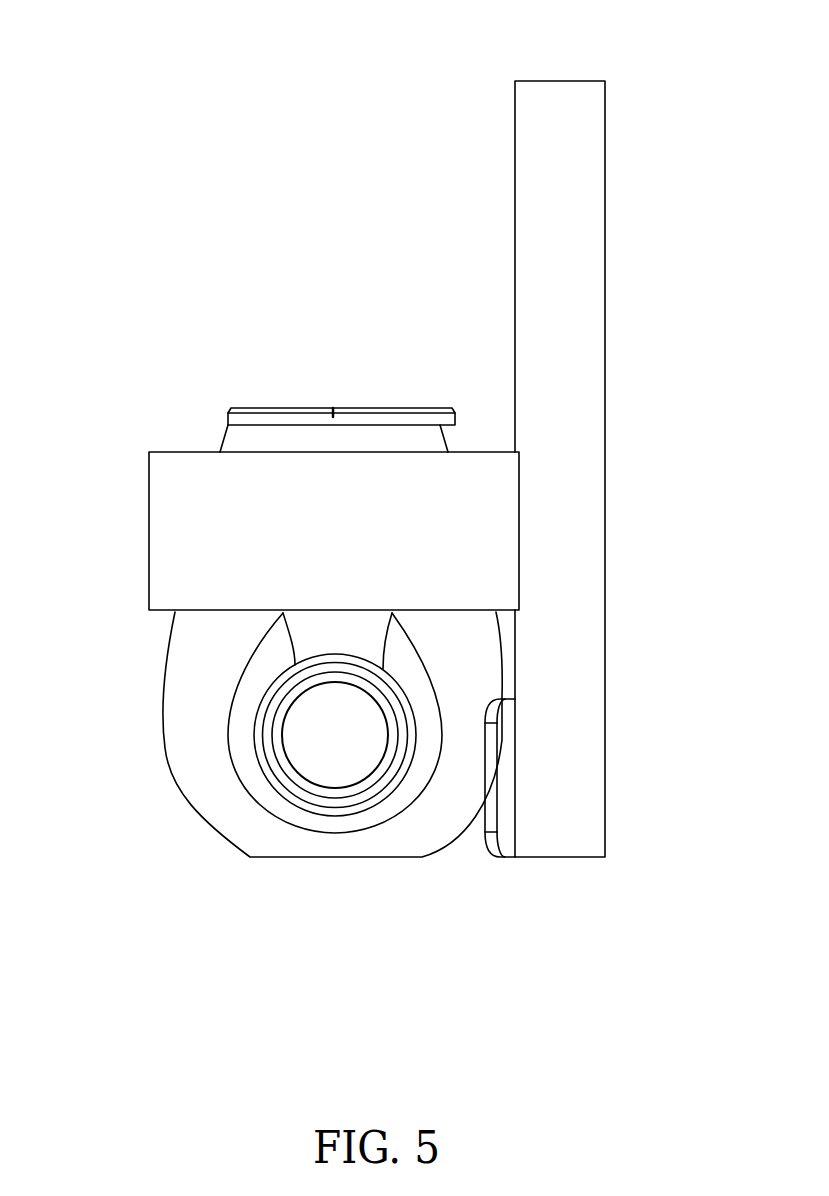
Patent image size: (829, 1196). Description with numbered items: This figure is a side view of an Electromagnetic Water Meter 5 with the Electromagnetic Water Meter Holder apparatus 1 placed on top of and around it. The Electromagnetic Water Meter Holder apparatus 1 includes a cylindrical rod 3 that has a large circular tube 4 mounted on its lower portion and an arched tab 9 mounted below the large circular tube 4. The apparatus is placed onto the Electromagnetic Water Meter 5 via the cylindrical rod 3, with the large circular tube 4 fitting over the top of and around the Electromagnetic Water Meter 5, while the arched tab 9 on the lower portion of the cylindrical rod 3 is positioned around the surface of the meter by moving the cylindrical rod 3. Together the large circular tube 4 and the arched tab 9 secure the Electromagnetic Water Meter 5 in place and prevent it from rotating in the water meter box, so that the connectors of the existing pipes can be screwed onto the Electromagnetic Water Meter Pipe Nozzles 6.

The Electromagnetic Water Meter Holder apparatus 1 is at (432, 125).
The cylindrical rod 3 is at (605, 247).
The large circular tube 4 is at (148, 535).
The Electromagnetic Water Meter 5 is at (165, 750).
The Electromagnetic Water Meter Pipe Nozzles 6 is at (322, 805).
The arched tab 9 is at (502, 818).